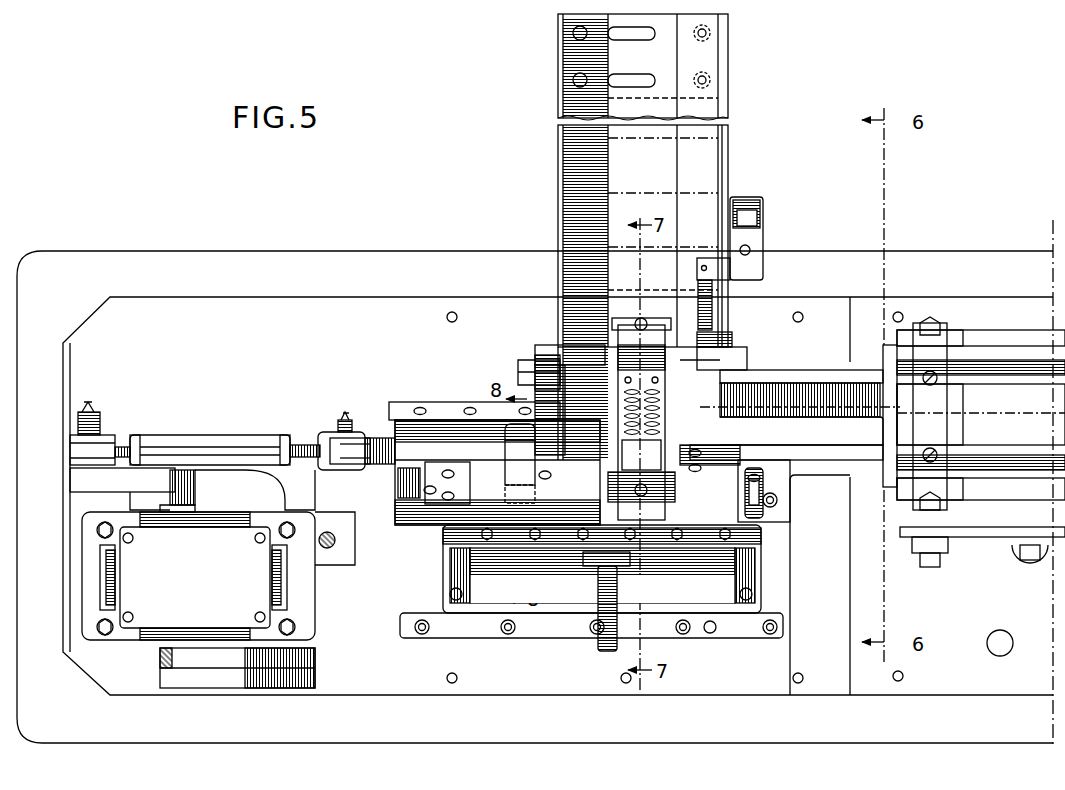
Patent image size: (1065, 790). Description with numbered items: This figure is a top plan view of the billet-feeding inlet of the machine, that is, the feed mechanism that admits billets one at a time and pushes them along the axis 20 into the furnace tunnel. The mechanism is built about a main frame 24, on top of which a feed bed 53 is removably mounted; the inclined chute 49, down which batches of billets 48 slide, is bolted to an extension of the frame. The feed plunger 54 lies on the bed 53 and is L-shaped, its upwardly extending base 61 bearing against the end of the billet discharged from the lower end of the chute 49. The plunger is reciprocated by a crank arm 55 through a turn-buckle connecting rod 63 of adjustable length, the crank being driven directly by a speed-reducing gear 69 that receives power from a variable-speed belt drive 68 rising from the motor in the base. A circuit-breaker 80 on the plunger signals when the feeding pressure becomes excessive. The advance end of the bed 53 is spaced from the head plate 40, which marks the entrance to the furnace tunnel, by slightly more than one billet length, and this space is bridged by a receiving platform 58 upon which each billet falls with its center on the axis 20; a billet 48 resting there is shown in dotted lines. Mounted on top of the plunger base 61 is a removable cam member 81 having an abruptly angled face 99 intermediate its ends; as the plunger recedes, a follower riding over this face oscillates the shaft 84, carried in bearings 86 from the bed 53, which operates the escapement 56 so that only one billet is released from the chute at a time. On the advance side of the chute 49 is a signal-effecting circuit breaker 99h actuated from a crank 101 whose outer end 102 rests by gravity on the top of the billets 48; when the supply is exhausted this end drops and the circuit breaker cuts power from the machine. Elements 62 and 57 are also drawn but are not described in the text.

The chute 49 is at (560, 140).
The billets 48 is at (615, 196).
The circuit breaker 99h is at (746, 222).
The crank 101 is at (700, 274).
The outer end of crank 102 is at (706, 312).
The crank arm 55 is at (114, 452).
The base of plunger 61 is at (540, 455).
The shaft 84 is at (470, 478).
The cam member 81 is at (492, 448).
The angled face of cam 99 is at (510, 440).
The feed plunger 54 is at (392, 440).
The connecting rod 63 is at (250, 445).
The speed-reducing gear 69 is at (218, 576).
The variable-speed belt drive 68 is at (316, 661).
The feed bar 62 is at (790, 382).
The axis 20 is at (820, 410).
The escapement 56 is at (680, 450).
The plate 57 is at (718, 456).
The bearings 86 is at (742, 480).
The receiving platform 58 is at (838, 457).
The feed bed 53 is at (697, 542).
The circuit-breaker 80 is at (597, 562).
The main frame 24 is at (748, 615).
The head plate 40 is at (883, 350).